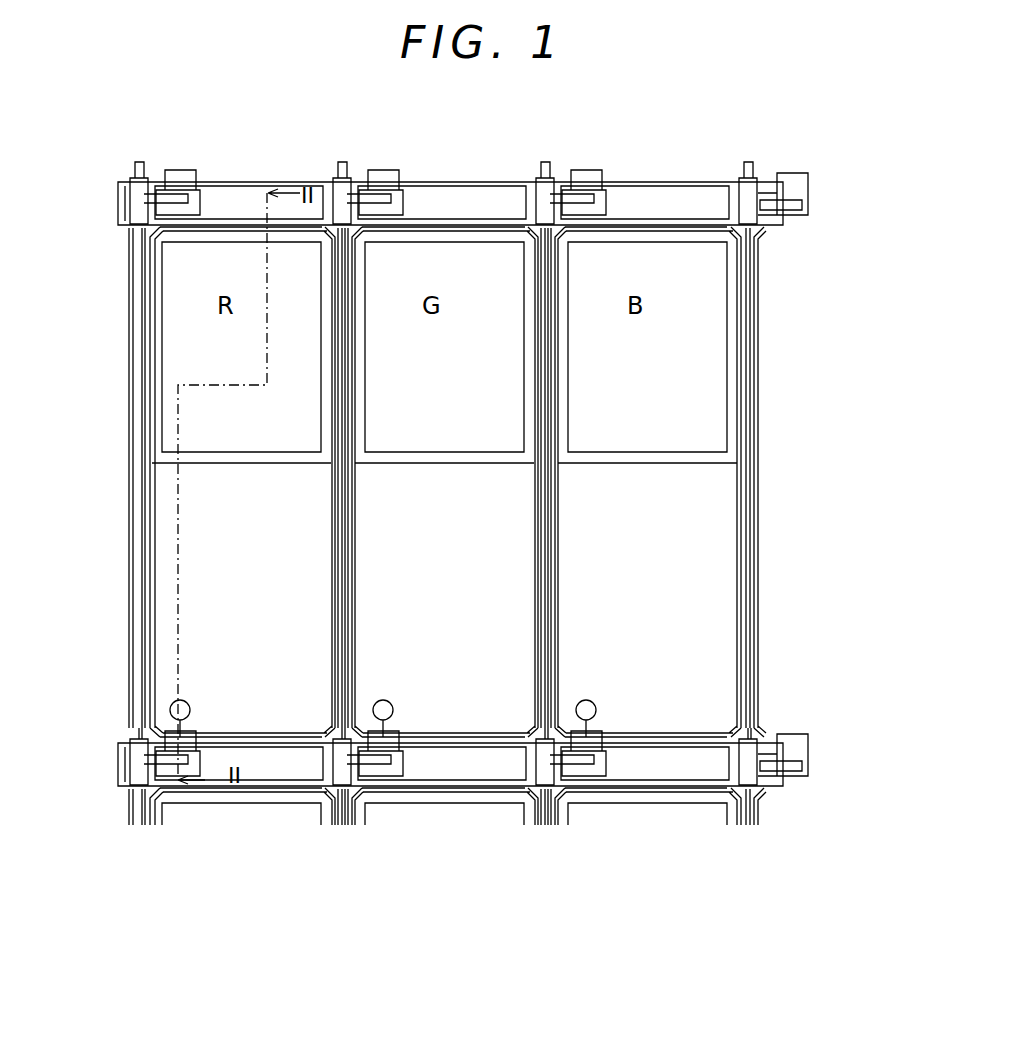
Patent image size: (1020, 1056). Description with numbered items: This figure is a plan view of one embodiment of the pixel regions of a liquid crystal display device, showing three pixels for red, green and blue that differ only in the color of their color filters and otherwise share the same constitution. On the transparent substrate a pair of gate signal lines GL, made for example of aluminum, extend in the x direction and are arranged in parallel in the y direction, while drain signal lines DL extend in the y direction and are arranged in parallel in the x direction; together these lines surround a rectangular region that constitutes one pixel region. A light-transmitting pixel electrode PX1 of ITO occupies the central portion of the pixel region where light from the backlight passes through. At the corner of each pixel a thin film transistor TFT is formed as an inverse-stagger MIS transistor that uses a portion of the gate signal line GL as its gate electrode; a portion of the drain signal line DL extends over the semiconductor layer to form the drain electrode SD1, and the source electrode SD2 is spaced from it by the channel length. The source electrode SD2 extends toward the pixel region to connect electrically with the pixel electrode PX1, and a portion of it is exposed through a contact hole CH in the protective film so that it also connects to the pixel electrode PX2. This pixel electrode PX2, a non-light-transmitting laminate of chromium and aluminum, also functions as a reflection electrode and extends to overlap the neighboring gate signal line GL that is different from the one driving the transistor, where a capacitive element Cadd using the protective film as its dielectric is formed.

The gate signal line GL is at (457, 180).
The drain signal line DL is at (568, 188).
The pixel electrode PX1 is at (705, 230).
The pixel electrode PX2 is at (633, 185).
The capacitive element Cadd is at (670, 203).
The drain electrode SD1 is at (605, 765).
The source electrode SD2 is at (720, 452).
The contact hole CH is at (598, 700).
The thin film transistor TFT is at (205, 770).